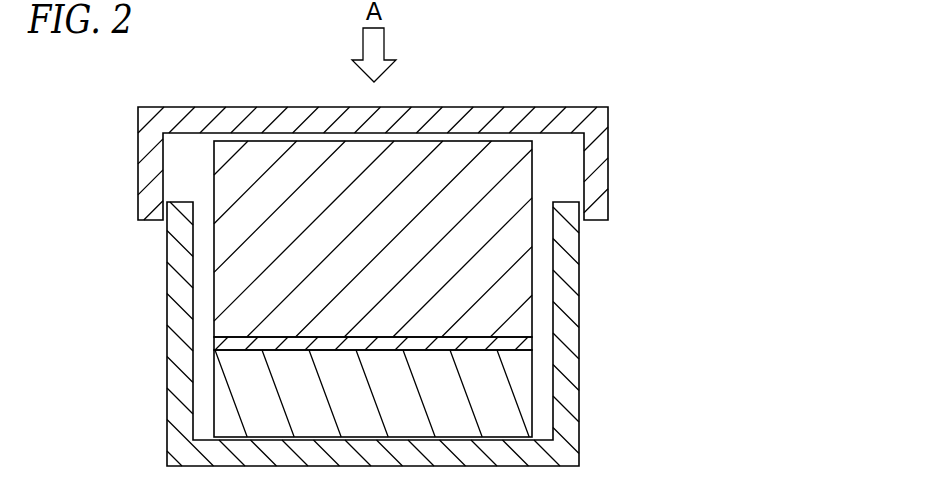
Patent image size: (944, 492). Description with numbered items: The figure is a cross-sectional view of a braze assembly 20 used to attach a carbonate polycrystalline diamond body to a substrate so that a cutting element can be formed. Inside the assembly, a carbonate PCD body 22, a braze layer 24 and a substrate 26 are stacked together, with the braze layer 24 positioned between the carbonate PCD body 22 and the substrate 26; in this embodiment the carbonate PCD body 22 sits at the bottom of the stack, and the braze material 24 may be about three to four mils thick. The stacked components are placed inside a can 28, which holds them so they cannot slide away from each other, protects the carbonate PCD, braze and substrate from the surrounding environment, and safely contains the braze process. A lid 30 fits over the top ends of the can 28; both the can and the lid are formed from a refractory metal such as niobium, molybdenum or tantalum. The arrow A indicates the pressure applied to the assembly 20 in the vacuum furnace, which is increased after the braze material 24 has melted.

The braze assembly 20 is at (522, 62).
The carbonate PCD body 22 is at (493, 396).
The braze layer 24 is at (493, 345).
The substrate 26 is at (493, 264).
The can 28 is at (598, 308).
The lid 30 is at (558, 107).